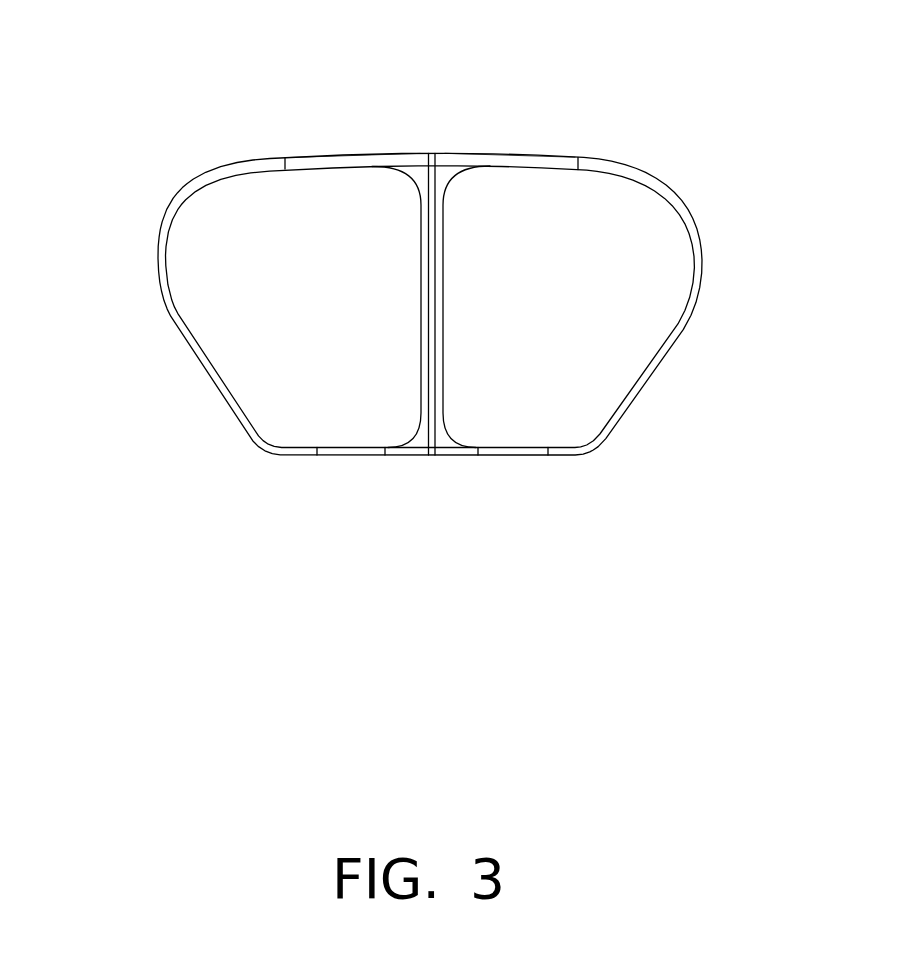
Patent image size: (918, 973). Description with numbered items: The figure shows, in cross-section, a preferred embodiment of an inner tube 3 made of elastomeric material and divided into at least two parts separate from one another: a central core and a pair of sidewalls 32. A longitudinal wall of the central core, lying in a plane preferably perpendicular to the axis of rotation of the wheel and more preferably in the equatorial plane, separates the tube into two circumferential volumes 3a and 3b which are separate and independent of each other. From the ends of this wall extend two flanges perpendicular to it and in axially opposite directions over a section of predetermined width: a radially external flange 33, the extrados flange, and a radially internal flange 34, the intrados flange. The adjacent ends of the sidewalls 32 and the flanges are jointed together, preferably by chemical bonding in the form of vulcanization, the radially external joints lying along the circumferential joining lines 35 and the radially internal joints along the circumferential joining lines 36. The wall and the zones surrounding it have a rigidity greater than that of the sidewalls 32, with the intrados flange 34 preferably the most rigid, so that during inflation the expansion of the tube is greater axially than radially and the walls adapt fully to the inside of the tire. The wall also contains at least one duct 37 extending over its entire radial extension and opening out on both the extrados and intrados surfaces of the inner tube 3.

The inner tube 3 is at (441, 287).
The circumferential volume 3a is at (363, 306).
The circumferential volume 3b is at (504, 307).
The sidewalls 32 is at (168, 297).
The radially external flange 33 is at (385, 163).
The radially internal flange 34 is at (416, 447).
The circumferential joining lines 35 is at (285, 158).
The circumferential joining lines 36 is at (317, 455).
The duct 37 is at (433, 156).